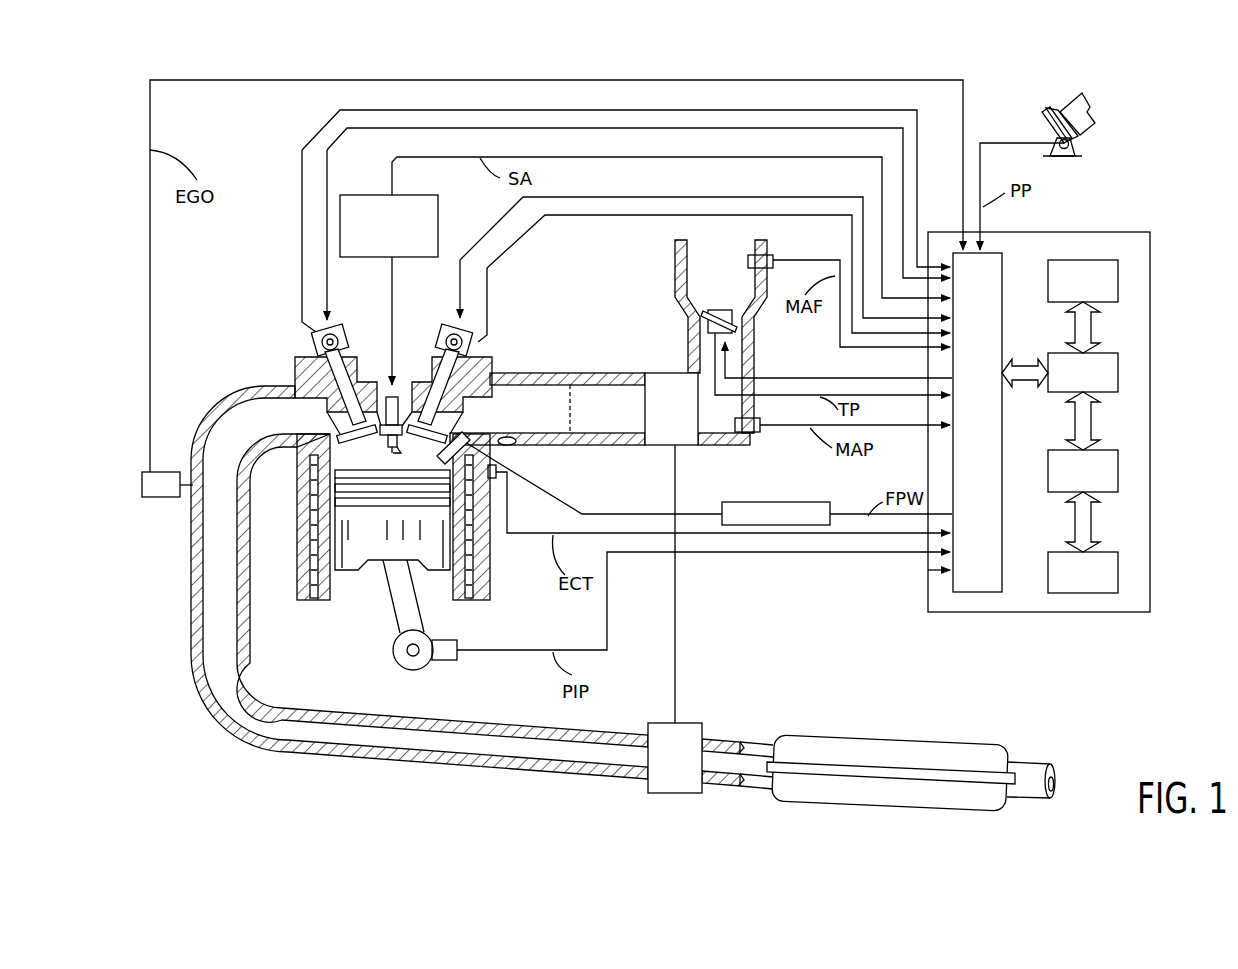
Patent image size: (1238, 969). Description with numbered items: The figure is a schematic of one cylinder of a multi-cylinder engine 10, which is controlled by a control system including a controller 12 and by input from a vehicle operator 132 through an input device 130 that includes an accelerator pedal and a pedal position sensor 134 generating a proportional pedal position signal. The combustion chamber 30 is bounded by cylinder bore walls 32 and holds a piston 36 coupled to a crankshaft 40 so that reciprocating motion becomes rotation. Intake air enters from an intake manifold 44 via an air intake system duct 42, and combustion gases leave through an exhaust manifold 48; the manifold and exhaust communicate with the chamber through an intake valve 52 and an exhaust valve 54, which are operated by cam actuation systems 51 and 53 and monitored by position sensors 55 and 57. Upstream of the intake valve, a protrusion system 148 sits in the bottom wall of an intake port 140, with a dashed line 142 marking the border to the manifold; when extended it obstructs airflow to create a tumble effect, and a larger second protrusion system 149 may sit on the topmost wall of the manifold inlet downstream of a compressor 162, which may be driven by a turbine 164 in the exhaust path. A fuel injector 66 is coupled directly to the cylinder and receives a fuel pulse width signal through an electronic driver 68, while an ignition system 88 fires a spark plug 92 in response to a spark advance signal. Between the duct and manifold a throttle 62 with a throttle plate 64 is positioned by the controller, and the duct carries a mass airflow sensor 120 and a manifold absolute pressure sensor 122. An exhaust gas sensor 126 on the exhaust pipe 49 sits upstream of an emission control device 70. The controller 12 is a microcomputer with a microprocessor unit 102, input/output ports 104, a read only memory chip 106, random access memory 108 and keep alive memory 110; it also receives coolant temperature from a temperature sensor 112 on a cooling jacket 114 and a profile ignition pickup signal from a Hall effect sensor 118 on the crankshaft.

The engine 10 is at (233, 312).
The controller 12 is at (1150, 232).
The combustion chamber 30 is at (365, 458).
The cylinder bore walls 32 is at (343, 592).
The piston 36 is at (378, 548).
The crankshaft 40 is at (405, 668).
The air intake system duct 42 is at (730, 285).
The intake manifold 44 is at (637, 431).
The exhaust manifold 48 is at (276, 428).
The exhaust pipe 49 is at (320, 755).
The cam actuation system 51 is at (447, 318).
The intake valve 52 is at (445, 428).
The cam actuation system 53 is at (330, 318).
The exhaust valve 54 is at (340, 432).
The position sensor 55 is at (470, 340).
The position sensor 57 is at (318, 340).
The throttle 62 is at (740, 318).
The throttle plate 64 is at (703, 315).
The fuel injector 66 is at (437, 457).
The electronic driver 68 is at (830, 506).
The emission control device 70 is at (965, 742).
The ignition system 88 is at (438, 245).
The spark plug 92 is at (397, 388).
The microprocessor unit 102 is at (1118, 372).
The input/output ports 104 is at (1002, 262).
The read only memory chip 106 is at (1118, 278).
The random access memory 108 is at (1118, 468).
The keep alive memory 110 is at (1118, 570).
The temperature sensor 112 is at (510, 482).
The cooling jacket 114 is at (475, 550).
The Hall effect sensor 118 is at (445, 662).
The mass airflow sensor 120 is at (773, 257).
The manifold absolute pressure sensor 122 is at (755, 432).
The exhaust gas sensor 126 is at (142, 478).
The input device 130 is at (1043, 122).
The vehicle operator 132 is at (1095, 110).
The pedal position sensor 134 is at (1082, 148).
The intake port 140 is at (550, 416).
The dashed line 142 is at (578, 400).
The protrusion system 148 is at (564, 436).
The second protrusion system 149 is at (630, 375).
The compressor 162 is at (691, 418).
The turbine 164 is at (692, 768).